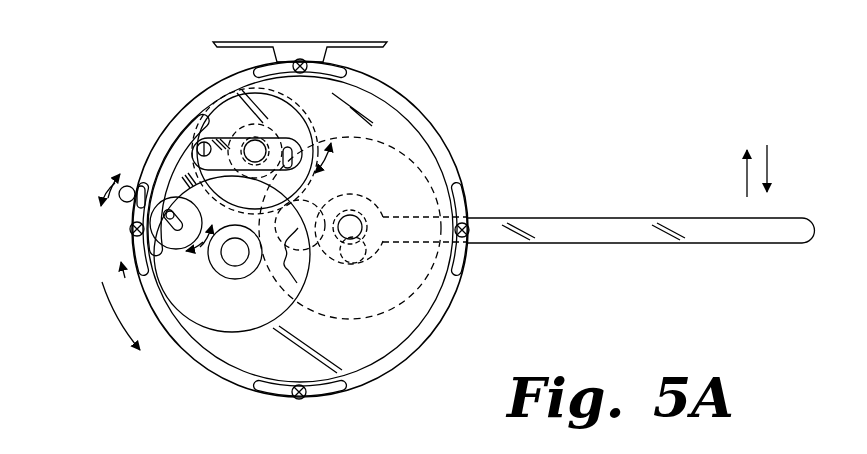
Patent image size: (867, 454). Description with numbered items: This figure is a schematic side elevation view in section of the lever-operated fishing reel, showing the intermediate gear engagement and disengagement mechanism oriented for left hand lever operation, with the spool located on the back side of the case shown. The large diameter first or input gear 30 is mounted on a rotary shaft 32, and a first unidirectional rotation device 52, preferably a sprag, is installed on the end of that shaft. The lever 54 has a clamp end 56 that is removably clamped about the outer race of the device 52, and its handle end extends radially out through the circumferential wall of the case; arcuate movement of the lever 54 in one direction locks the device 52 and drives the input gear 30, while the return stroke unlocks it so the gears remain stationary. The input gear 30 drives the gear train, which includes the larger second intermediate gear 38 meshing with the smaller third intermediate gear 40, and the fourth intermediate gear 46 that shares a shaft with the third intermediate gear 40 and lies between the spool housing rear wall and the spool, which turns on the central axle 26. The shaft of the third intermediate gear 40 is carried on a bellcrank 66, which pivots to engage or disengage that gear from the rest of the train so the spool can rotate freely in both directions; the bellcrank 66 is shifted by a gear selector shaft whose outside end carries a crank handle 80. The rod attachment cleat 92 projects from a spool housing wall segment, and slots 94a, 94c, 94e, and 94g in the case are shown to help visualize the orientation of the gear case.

The central axle 26 is at (281, 278).
The first or input gear 30 is at (394, 147).
The rotary shaft 32 is at (341, 245).
The second intermediate gear 38 is at (223, 305).
The third intermediate gear 40 is at (291, 140).
The fourth intermediate gear 46 is at (200, 123).
The first unidirectional rotation device 52 is at (362, 256).
The lever 54 is at (592, 217).
The clamp end 56 is at (371, 192).
The bellcrank 66 is at (178, 145).
The crank handle 80 is at (125, 202).
The rod attachment cleat 92 is at (305, 43).
The slot 94a is at (258, 66).
The slot 94c is at (464, 196).
The slot 94e is at (330, 398).
The slot 94g is at (129, 244).